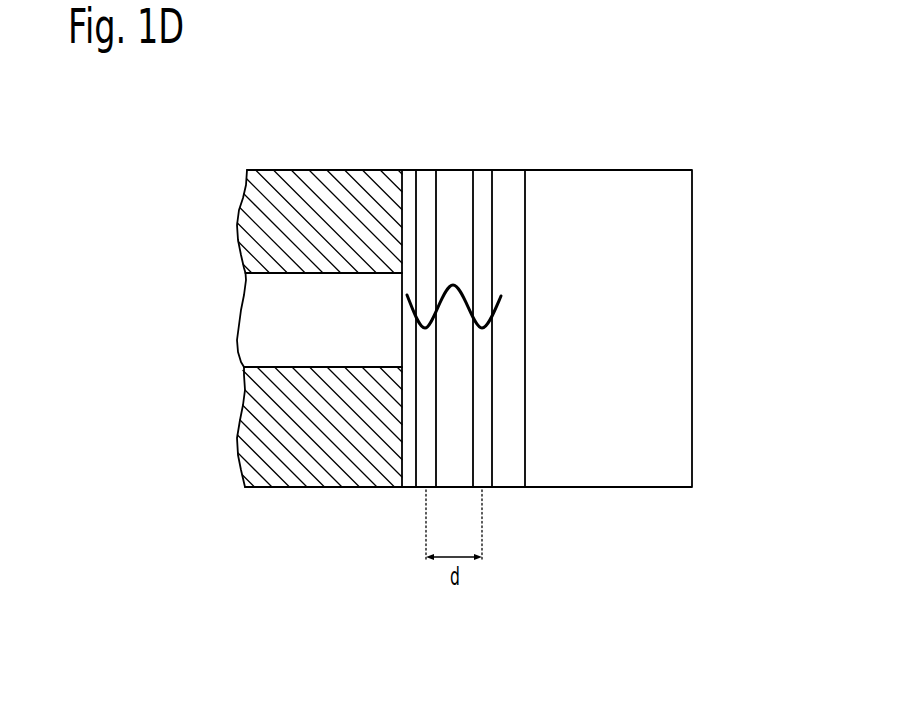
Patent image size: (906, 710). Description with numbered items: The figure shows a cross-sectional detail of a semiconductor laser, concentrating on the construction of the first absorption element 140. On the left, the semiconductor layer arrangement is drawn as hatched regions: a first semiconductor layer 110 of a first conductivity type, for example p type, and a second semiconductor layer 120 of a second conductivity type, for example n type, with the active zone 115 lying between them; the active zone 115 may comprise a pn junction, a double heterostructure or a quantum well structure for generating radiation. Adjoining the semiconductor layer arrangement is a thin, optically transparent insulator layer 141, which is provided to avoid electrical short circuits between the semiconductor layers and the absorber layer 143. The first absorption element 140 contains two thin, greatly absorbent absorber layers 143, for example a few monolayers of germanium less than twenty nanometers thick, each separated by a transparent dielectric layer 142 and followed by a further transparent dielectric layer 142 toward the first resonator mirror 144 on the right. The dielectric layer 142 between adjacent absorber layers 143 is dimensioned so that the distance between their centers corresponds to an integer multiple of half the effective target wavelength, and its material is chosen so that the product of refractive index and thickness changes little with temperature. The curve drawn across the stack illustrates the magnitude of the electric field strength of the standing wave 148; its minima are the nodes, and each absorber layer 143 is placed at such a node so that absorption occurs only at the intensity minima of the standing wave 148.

The first semiconductor layer 110 is at (312, 473).
The active zone 115 is at (263, 321).
The second semiconductor layer 120 is at (303, 187).
The first absorption element 140 is at (523, 592).
The transparent insulator layer 141 is at (408, 475).
The transparent dielectric layer 142 is at (453, 161).
The absorber layer 143 is at (420, 162).
The first resonator mirror 144 is at (680, 367).
The standing wave 148 is at (500, 298).